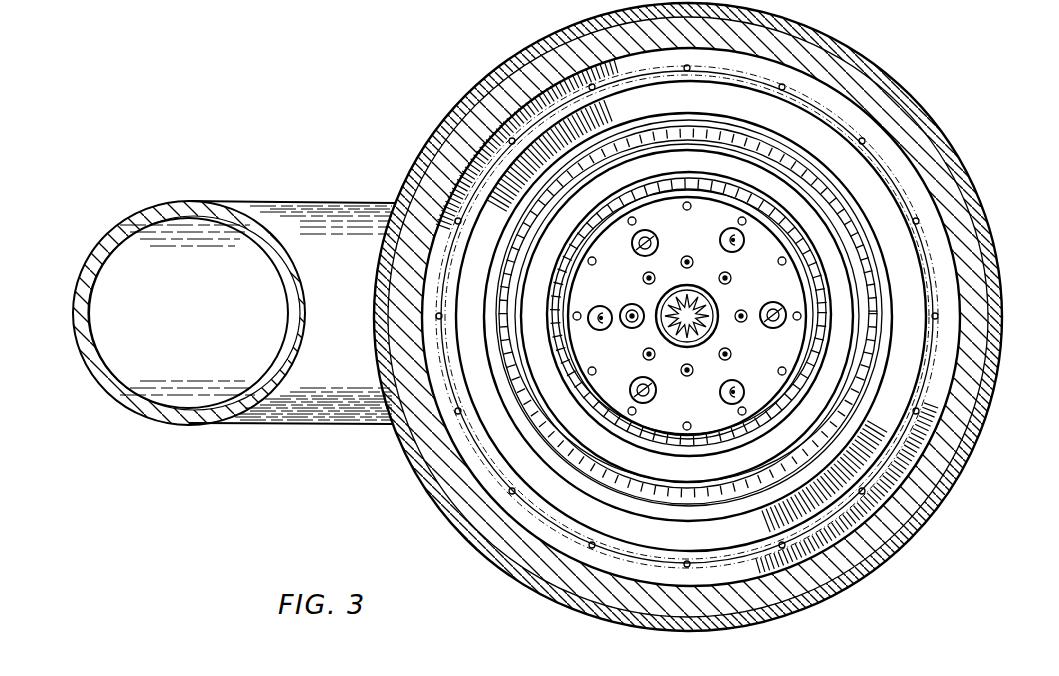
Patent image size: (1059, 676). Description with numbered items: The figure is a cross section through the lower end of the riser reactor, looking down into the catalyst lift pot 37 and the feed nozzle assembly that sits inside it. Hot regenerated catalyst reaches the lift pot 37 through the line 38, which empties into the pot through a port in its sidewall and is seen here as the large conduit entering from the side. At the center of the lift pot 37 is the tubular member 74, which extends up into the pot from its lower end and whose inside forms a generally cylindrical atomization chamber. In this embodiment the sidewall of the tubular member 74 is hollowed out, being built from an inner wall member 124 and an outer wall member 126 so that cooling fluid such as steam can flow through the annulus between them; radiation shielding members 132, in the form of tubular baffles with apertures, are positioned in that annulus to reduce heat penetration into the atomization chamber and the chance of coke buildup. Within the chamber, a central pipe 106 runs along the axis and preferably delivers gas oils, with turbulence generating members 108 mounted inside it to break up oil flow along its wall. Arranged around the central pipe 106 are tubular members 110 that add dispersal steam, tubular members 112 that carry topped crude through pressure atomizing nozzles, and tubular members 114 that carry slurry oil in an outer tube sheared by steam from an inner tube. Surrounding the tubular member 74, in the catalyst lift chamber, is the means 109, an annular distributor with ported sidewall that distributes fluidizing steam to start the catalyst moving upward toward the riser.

The catalyst lift pot 37 is at (1000, 397).
The line 38 is at (291, 200).
The tubular member 74 is at (727, 118).
The central pipe 106 is at (670, 303).
The turbulence generating members 108 is at (710, 304).
The means for distributing a fluidizing gas 109 is at (946, 281).
The tubular members 110 is at (687, 257).
The tubular members 112 is at (600, 306).
The tubular members 114 is at (656, 238).
The inner wall member 124 is at (804, 272).
The outer wall member 126 is at (862, 225).
The radiation shielding members 132 is at (637, 188).